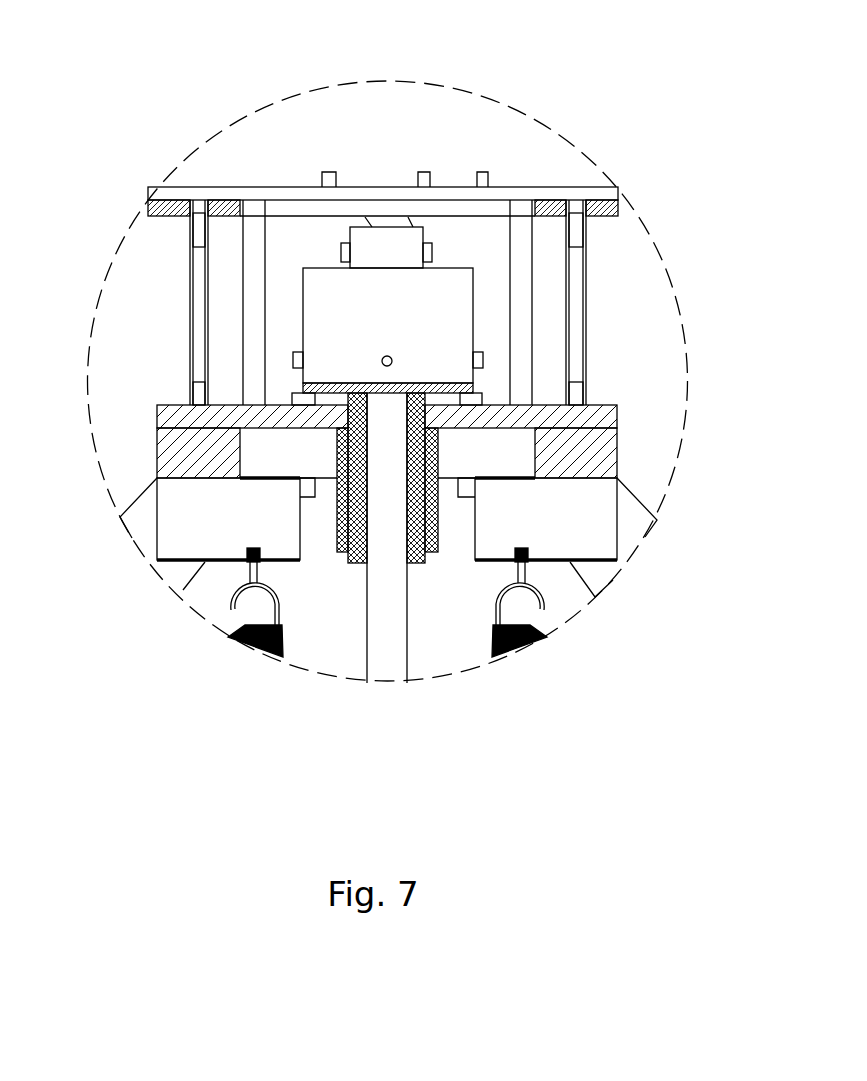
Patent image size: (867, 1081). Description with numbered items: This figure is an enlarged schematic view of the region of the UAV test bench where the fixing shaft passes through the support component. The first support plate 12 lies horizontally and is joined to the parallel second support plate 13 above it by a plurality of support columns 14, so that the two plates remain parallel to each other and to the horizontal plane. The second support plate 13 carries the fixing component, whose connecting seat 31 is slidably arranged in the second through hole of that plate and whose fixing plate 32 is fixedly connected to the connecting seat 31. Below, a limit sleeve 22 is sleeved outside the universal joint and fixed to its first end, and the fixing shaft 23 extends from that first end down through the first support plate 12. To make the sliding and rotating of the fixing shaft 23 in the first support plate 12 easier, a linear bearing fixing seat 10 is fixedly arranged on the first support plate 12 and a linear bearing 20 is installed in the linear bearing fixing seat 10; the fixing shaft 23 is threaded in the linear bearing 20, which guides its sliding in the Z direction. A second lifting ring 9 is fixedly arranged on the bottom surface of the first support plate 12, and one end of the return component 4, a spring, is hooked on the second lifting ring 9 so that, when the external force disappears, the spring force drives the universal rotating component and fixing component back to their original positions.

The return component 4 is at (540, 597).
The second lifting ring 9 is at (230, 607).
The linear bearing fixing seat 10 is at (337, 530).
The first support plate 12 is at (157, 410).
The second support plate 13 is at (152, 203).
The support column 14 is at (190, 305).
The linear bearing 20 is at (450, 393).
The limit sleeve 22 is at (448, 318).
The fixing shaft 23 is at (382, 605).
The connecting seat 31 is at (440, 210).
The fixing plate 32 is at (465, 205).